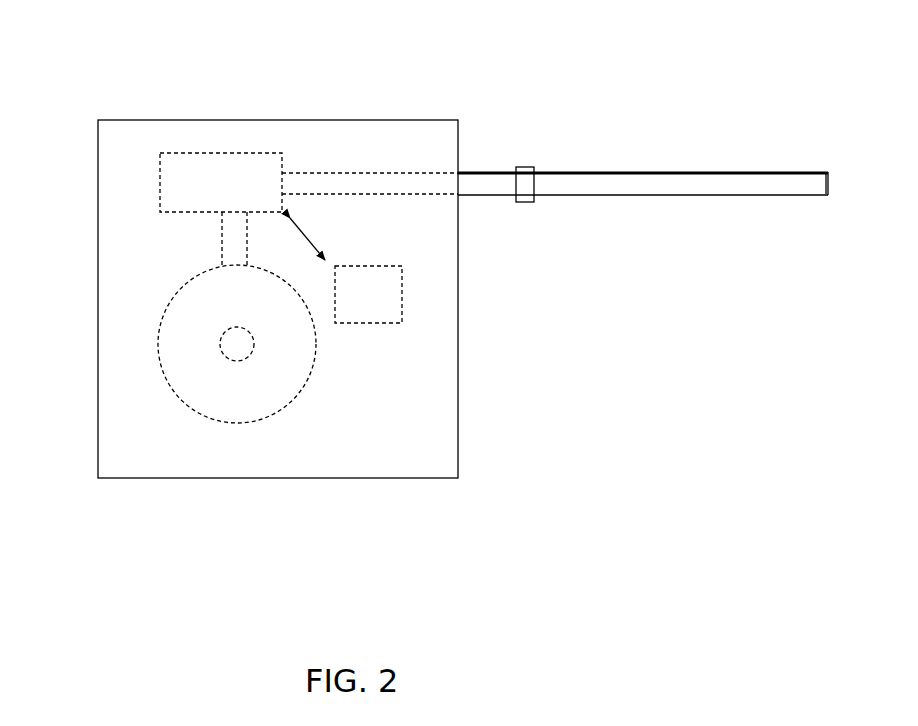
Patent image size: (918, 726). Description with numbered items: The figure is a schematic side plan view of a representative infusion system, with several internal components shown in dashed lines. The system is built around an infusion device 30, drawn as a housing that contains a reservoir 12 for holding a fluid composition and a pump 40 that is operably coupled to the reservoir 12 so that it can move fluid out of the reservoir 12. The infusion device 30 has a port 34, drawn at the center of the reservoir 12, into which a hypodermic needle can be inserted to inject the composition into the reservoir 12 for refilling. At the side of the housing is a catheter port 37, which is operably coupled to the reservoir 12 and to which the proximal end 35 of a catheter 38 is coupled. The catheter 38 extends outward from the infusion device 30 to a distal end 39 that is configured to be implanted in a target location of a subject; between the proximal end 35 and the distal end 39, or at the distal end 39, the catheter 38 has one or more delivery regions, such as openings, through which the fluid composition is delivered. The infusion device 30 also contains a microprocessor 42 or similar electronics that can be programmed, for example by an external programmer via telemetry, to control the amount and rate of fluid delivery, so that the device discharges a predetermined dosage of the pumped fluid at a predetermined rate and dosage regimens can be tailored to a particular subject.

The reservoir 12 is at (178, 393).
The infusion device 30 is at (86, 101).
The port 34 is at (242, 350).
The proximal end 35 is at (555, 196).
The catheter port 37 is at (490, 172).
The catheter 38 is at (652, 153).
The distal end 39 is at (786, 196).
The pump 40 is at (222, 152).
The microprocessor 42 is at (402, 297).